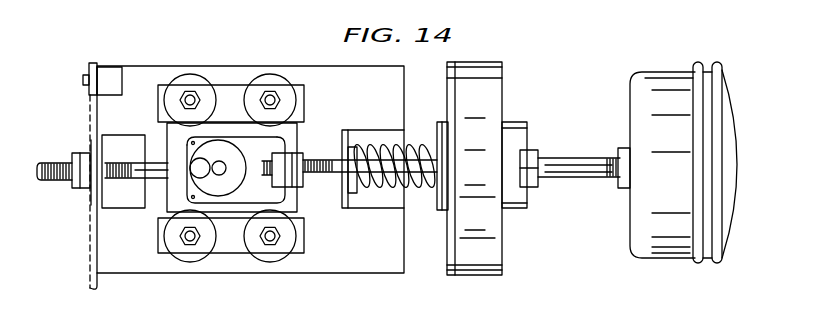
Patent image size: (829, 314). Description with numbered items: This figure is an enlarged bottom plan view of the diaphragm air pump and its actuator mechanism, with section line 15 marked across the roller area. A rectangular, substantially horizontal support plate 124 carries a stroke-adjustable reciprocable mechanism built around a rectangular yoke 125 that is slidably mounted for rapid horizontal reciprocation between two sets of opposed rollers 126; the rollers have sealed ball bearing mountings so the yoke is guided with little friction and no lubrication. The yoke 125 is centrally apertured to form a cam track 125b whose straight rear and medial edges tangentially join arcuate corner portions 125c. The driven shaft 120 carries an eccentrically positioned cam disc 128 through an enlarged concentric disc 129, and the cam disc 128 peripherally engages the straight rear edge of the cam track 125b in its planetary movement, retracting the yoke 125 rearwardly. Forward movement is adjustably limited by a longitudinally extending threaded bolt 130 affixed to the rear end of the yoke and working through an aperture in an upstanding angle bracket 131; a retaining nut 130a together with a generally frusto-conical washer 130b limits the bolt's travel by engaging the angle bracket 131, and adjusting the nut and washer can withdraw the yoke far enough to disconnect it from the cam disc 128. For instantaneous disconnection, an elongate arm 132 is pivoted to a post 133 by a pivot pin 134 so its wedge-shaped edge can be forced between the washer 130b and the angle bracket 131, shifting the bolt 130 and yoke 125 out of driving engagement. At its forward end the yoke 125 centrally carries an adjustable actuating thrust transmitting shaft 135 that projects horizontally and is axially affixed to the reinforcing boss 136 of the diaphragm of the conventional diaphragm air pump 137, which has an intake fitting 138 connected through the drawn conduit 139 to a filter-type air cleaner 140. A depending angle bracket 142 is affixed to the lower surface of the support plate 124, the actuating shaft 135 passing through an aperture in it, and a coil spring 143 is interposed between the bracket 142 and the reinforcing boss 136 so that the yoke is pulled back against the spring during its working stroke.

The section line 15- 15 is at (263, 63).
The driven shaft 120 is at (221, 159).
The support plate 124 is at (333, 262).
The yoke 125 is at (227, 174).
The cam track 125b is at (190, 144).
The arcuate corner portions 125c is at (185, 198).
The rollers 126 is at (262, 84).
The cam disc 128 is at (204, 177).
The concentric disc 129 is at (240, 164).
The threaded bolt 130 is at (55, 181).
The retaining nut 130a is at (80, 190).
The frusto-conical washer 130b is at (91, 147).
The angle bracket 131 is at (100, 138).
The elongate arm 132 is at (88, 66).
The post 133 is at (108, 76).
The pivot pin 134 is at (83, 79).
The actuating thrust transmitting shaft 135 is at (319, 161).
The reinforcing boss 136 is at (443, 212).
The diaphragm air pump 137 is at (487, 168).
The intake fitting 138 is at (522, 152).
The shaft 139 is at (566, 170).
The air cleaner 140 is at (686, 186).
The depending angle bracket 142 is at (344, 208).
The coil spring 143 is at (368, 150).